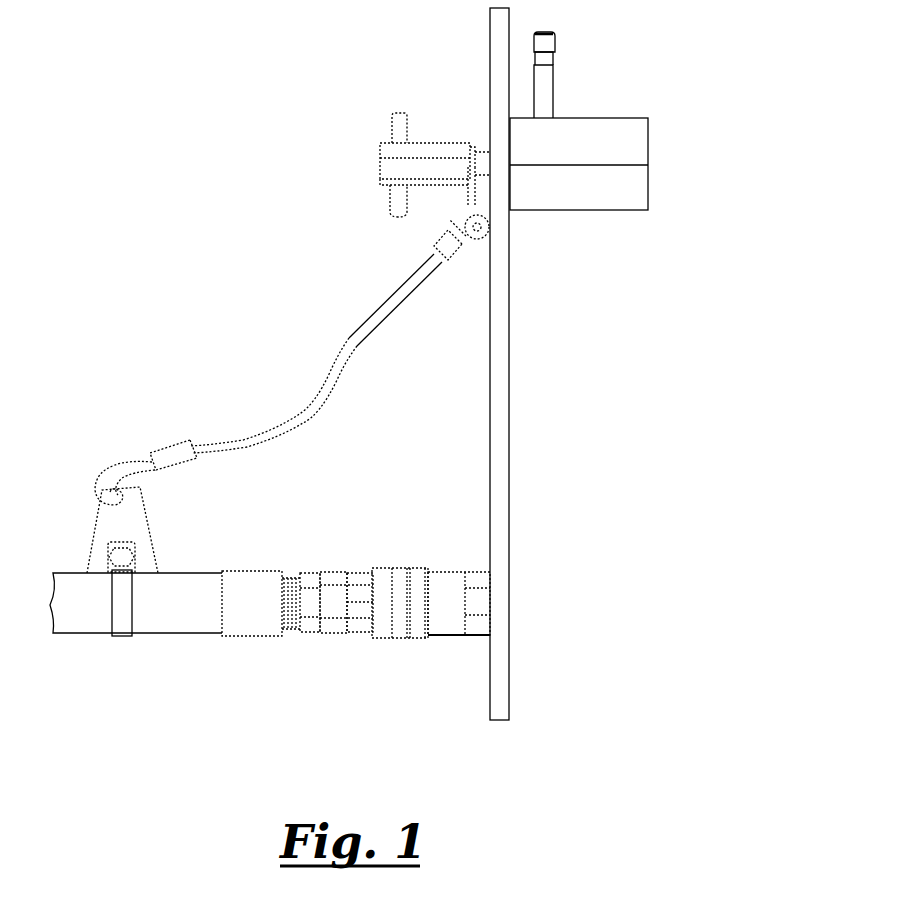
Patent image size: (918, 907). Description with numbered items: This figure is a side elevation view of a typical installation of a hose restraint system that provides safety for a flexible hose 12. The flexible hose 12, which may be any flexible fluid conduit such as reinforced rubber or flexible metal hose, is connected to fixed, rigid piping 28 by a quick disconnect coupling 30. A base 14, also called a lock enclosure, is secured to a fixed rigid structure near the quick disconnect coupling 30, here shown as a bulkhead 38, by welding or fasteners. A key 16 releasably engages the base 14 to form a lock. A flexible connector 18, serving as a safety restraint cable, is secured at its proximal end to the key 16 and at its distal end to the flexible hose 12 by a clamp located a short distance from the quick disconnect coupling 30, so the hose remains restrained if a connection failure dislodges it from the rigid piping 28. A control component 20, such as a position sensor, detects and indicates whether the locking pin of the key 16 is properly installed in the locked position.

The flexible hose 12 is at (172, 621).
The base 14 is at (595, 101).
The key 16 is at (363, 160).
The flexible connector 18 is at (350, 352).
The control component 20 is at (547, 73).
The rigid piping 28 is at (490, 635).
The quick disconnect coupling 30 is at (368, 572).
The bulkhead 38 is at (495, 407).